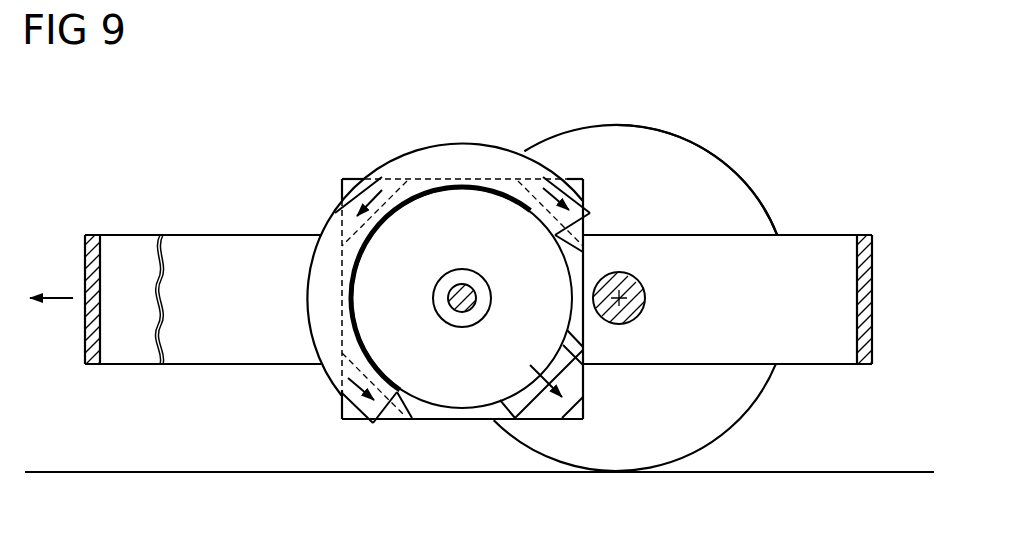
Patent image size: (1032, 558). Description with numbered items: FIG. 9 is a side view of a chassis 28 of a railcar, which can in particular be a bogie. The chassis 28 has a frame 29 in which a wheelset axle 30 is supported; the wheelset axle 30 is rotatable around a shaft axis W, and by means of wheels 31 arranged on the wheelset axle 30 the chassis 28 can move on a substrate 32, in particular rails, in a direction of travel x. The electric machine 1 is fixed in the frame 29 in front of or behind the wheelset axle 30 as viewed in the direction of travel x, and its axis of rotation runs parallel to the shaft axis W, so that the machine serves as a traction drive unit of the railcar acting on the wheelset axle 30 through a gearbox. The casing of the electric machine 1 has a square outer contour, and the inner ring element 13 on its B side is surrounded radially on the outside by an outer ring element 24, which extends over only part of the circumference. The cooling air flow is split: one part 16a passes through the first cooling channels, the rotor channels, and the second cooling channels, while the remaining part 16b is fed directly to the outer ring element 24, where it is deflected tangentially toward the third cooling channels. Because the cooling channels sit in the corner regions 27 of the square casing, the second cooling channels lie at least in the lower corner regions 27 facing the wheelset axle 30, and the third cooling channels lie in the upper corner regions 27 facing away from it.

The electric machine 1 is at (318, 112).
The inner ring element 13 is at (470, 220).
The part of the cooling air flow 16a is at (543, 385).
The part of the cooling air flow 16b is at (360, 187).
The outer ring element 24 is at (440, 157).
The corner regions 27 is at (343, 180).
The chassis 28 is at (803, 98).
The frame 29 is at (815, 235).
The wheelset axle 30 is at (632, 273).
The wheels 31 is at (723, 157).
The substrate 32 is at (893, 470).
The shaft axis W is at (605, 273).
The direction of travel x is at (52, 297).